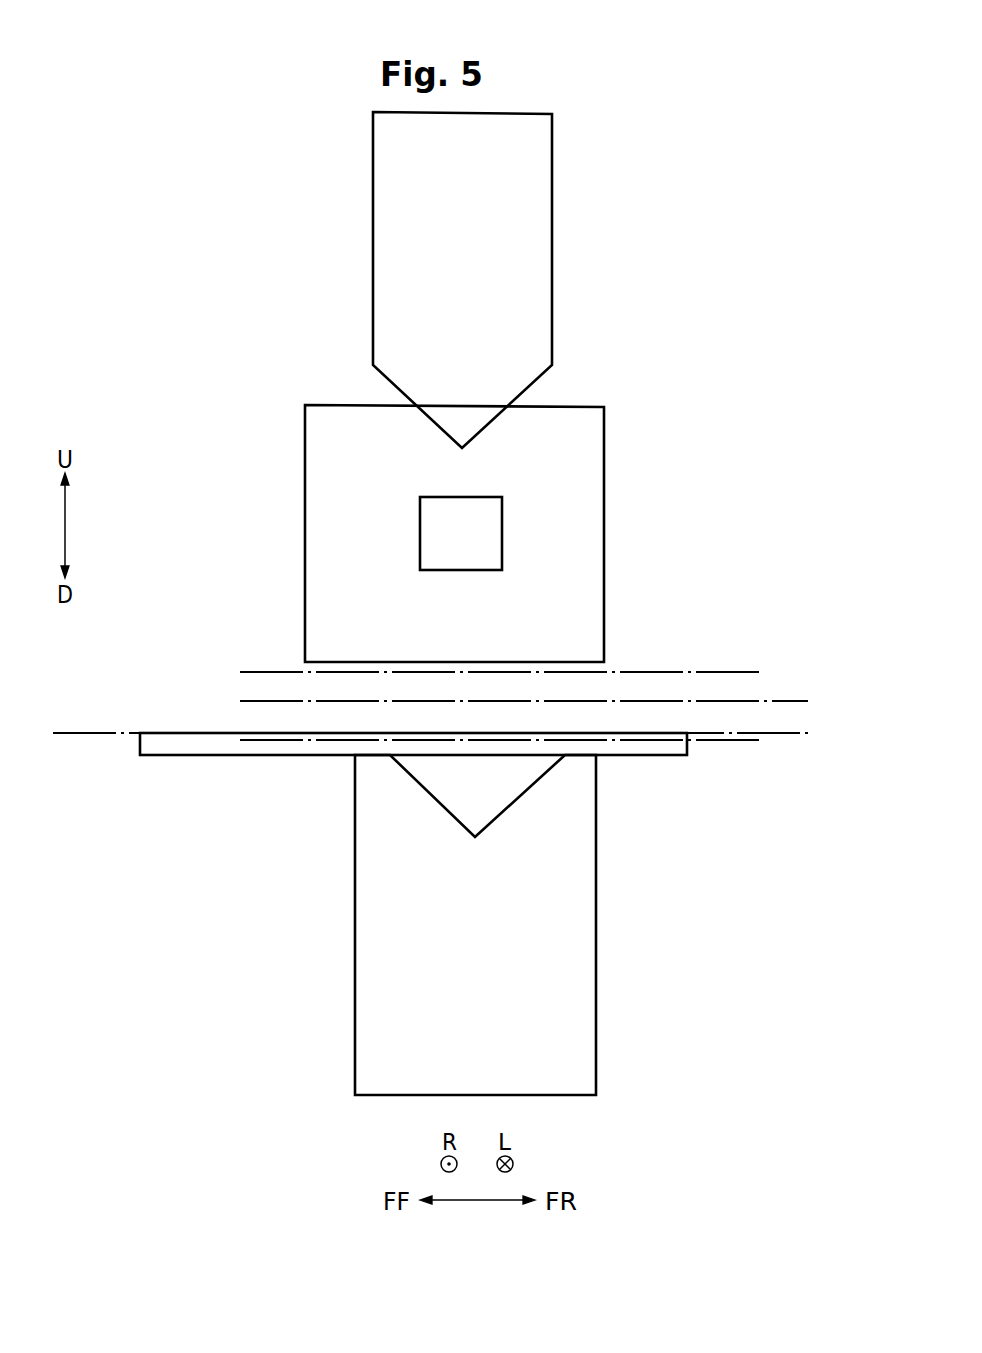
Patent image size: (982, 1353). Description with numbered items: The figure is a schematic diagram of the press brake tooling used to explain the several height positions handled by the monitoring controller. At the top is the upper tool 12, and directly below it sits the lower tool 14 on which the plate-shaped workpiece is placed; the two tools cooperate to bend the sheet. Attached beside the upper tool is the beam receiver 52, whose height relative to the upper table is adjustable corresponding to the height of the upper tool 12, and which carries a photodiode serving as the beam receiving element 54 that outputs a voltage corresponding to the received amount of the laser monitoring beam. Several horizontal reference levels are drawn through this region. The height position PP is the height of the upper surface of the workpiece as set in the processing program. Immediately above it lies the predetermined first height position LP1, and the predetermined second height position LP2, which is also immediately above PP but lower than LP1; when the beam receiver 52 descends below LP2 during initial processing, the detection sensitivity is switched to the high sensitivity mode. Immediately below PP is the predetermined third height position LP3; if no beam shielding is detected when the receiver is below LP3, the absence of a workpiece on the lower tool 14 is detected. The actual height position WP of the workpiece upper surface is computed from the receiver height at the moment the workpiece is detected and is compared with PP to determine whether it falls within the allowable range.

The upper tool 12 is at (373, 224).
The lower tool 14 is at (355, 932).
The beam receiver 52 is at (305, 428).
The beam receiving element 54 is at (433, 535).
The predetermined first height position LP1 is at (727, 672).
The predetermined second height position LP2 is at (798, 700).
The predetermined third height position LP3 is at (728, 747).
The height position of the upper surface of the workpiece in the processing program PP is at (97, 733).
The actual height position of the upper surface of the workpiece WP is at (793, 738).